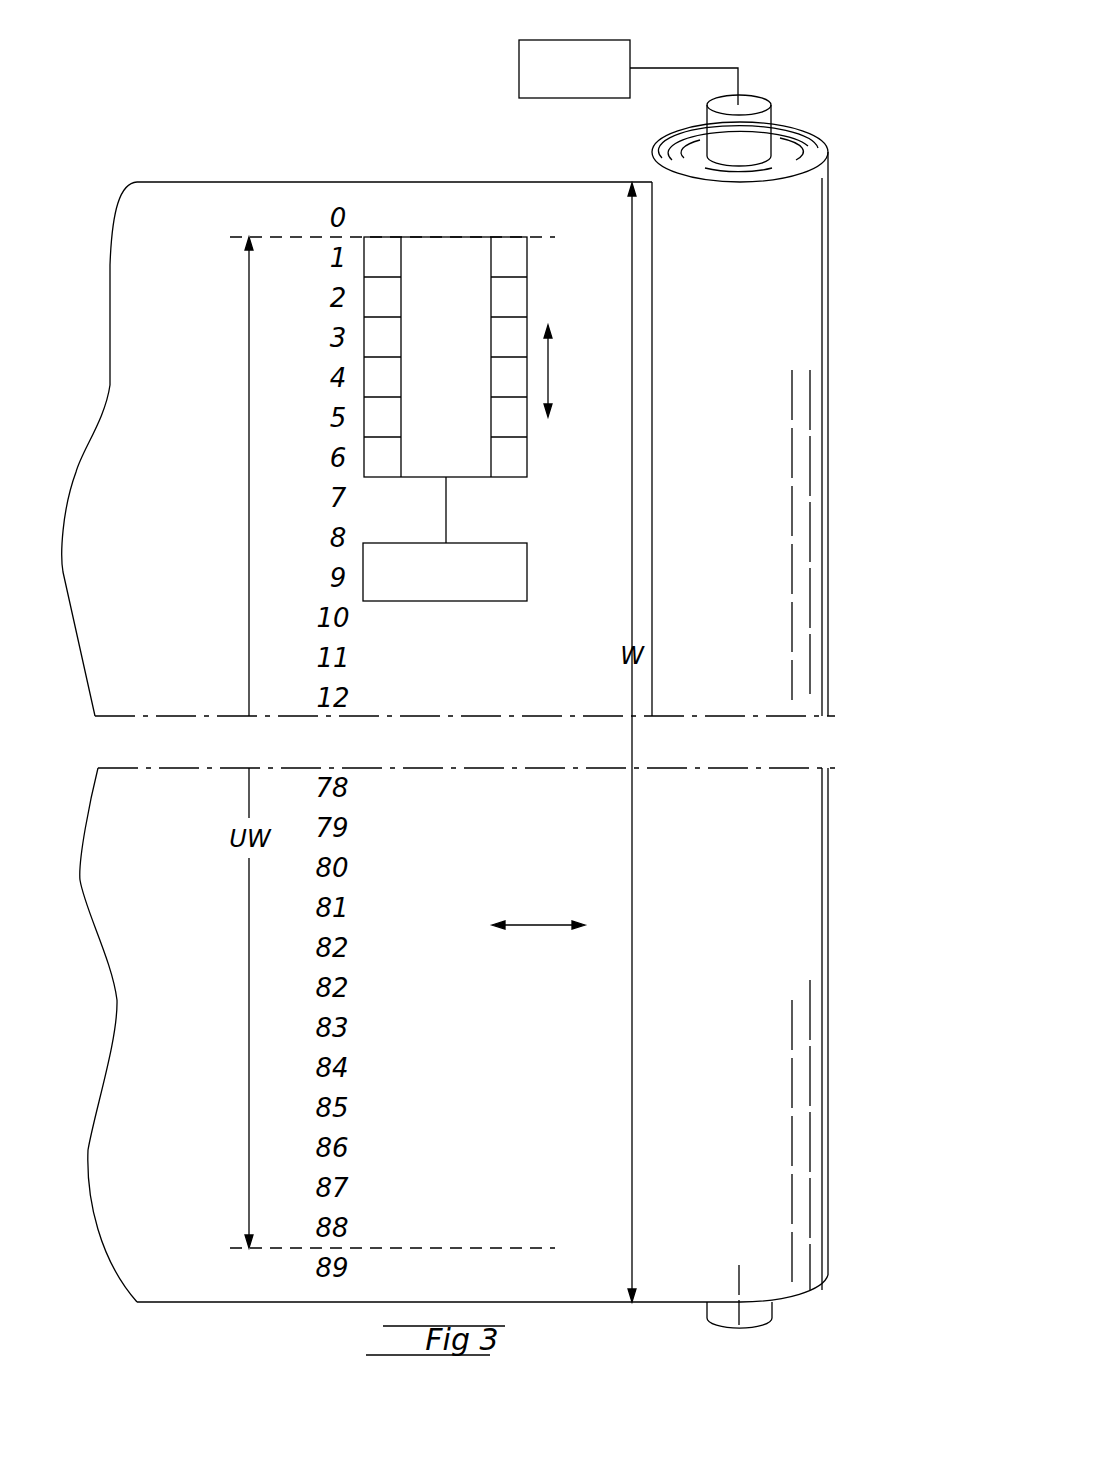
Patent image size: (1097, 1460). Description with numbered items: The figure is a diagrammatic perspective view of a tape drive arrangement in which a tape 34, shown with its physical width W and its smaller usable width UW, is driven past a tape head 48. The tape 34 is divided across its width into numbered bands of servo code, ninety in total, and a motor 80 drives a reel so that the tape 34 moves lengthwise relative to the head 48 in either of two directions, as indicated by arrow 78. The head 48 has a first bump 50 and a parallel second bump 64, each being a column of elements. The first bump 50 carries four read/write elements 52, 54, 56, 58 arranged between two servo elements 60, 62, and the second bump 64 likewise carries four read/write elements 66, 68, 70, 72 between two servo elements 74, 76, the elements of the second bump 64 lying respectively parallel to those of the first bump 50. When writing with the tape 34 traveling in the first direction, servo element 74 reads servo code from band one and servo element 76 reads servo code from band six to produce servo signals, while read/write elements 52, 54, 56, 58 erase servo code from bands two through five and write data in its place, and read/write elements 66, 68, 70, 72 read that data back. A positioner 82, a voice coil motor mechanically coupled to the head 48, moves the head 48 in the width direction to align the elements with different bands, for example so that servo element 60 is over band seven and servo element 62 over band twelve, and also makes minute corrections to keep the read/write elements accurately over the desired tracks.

The tape 34 is at (768, 293).
The motor 80 is at (583, 40).
The tape head 48 is at (448, 225).
The first bump 50 is at (382, 225).
The second bump 64 is at (506, 225).
The servo element 60 is at (369, 261).
The read/write element 52 is at (369, 301).
The read/write element 54 is at (369, 341).
The read/write element 56 is at (369, 381).
The read/write element 58 is at (369, 421).
The servo element 62 is at (369, 461).
The servo element 74 is at (520, 262).
The read/write element 66 is at (520, 302).
The read/write element 68 is at (520, 342).
The read/write element 70 is at (520, 382).
The read/write element 72 is at (520, 422).
The servo element 76 is at (520, 462).
The positioner 82 is at (493, 601).
The arrow 78 is at (541, 925).